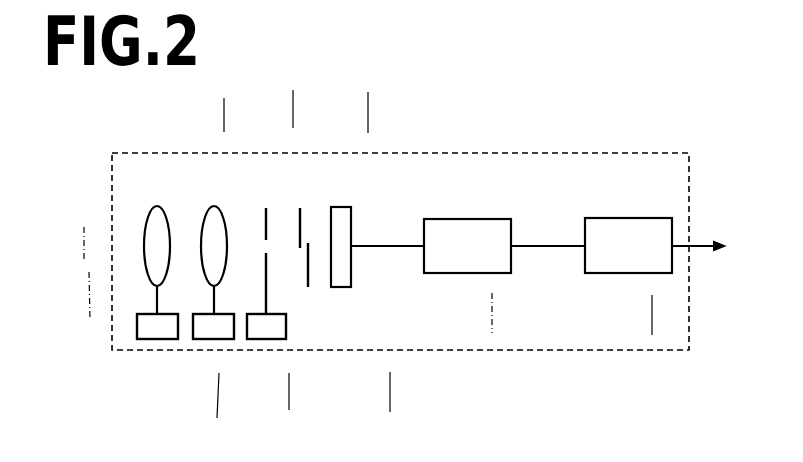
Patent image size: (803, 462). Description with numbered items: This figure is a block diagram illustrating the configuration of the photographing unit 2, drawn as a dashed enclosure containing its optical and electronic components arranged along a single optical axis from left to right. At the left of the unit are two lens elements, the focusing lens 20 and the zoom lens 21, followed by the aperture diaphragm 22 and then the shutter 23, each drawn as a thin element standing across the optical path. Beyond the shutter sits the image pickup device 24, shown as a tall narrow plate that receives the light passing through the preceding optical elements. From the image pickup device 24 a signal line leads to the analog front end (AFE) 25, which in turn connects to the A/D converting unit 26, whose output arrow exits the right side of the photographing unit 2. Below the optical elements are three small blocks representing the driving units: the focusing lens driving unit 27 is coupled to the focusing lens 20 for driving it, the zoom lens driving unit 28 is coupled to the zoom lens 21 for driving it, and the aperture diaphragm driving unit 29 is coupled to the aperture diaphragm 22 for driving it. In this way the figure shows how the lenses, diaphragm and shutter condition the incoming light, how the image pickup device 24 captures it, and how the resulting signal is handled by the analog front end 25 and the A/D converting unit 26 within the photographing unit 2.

The photographing unit 2 is at (633, 152).
The focusing lens 20 is at (144, 249).
The zoom lens 21 is at (213, 207).
The aperture diaphragm 22 is at (264, 208).
The shutter 23 is at (301, 208).
The image pickup device 24 is at (341, 288).
The analog front end (AFE) 25 is at (466, 274).
The A/D converting unit 26 is at (626, 274).
The focusing lens driving unit 27 is at (137, 327).
The zoom lens driving unit 28 is at (215, 340).
The aperture diaphragm driving unit 29 is at (267, 340).